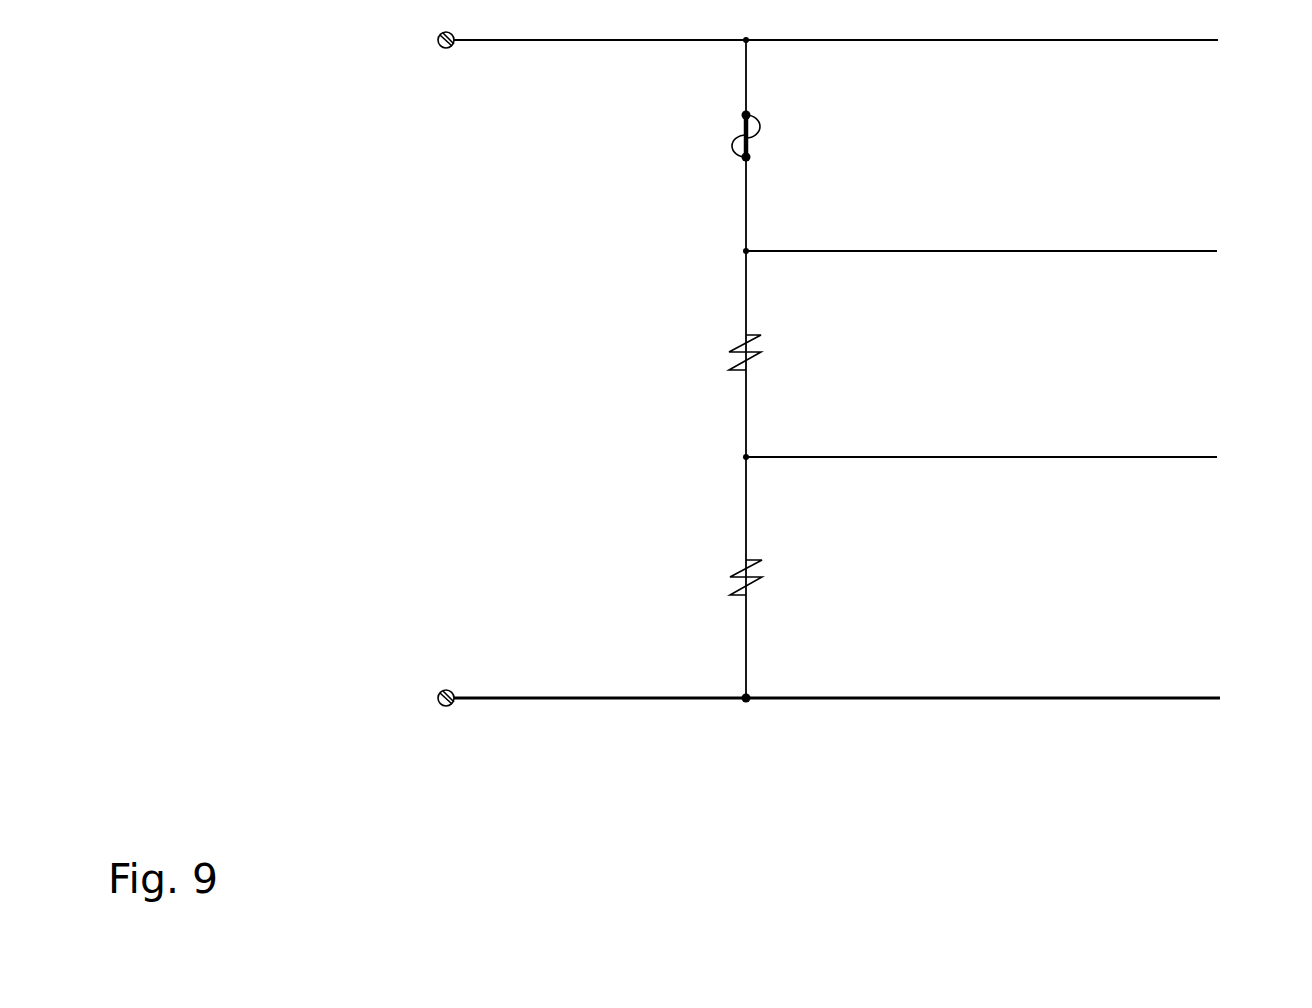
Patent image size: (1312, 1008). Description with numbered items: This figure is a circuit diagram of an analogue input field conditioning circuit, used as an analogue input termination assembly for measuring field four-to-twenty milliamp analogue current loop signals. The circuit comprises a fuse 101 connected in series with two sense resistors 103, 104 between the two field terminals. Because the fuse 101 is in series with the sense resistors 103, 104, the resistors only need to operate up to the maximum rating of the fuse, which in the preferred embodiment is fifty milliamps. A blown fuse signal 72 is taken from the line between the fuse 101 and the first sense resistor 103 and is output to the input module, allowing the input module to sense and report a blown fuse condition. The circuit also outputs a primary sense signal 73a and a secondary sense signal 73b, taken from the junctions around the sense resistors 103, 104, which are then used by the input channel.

The blown fuse signal 72 is at (1184, 48).
The primary sense signal 73a is at (1189, 466).
The secondary sense signal 73b is at (1189, 260).
The fuse 101 is at (694, 145).
The sense resistor 103 is at (710, 357).
The sense resistor 104 is at (692, 588).